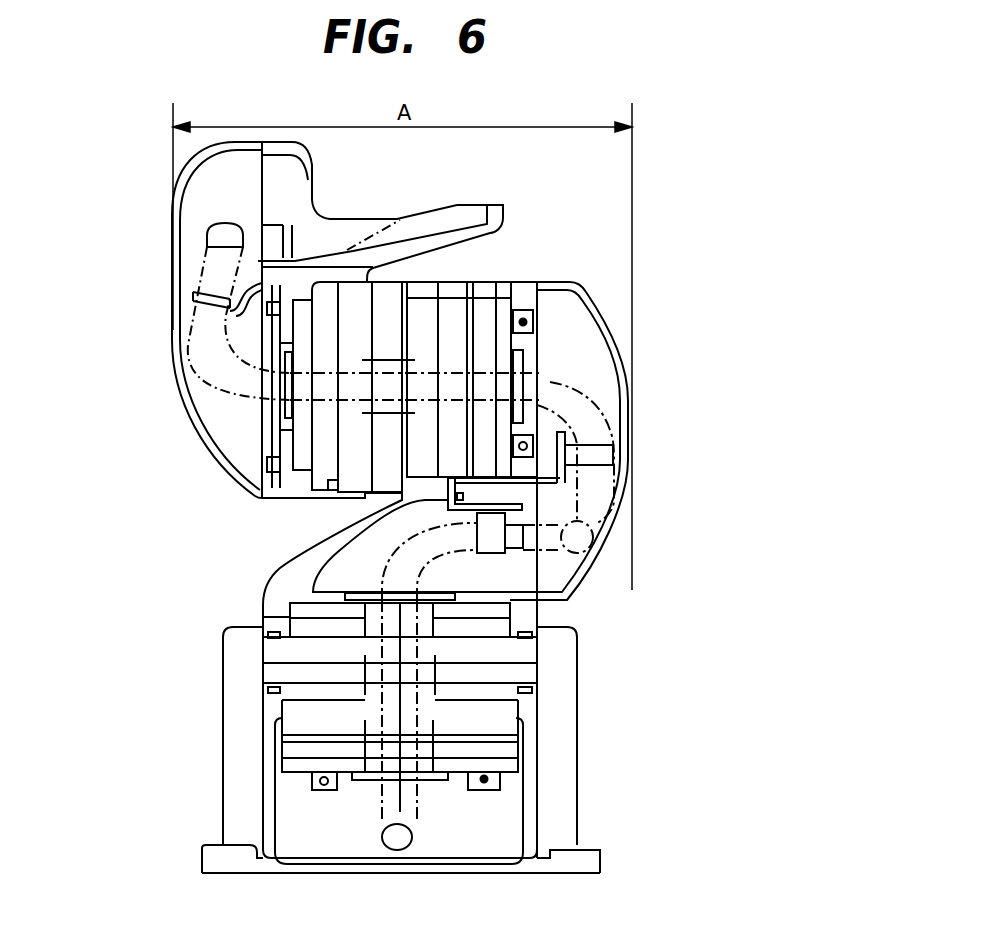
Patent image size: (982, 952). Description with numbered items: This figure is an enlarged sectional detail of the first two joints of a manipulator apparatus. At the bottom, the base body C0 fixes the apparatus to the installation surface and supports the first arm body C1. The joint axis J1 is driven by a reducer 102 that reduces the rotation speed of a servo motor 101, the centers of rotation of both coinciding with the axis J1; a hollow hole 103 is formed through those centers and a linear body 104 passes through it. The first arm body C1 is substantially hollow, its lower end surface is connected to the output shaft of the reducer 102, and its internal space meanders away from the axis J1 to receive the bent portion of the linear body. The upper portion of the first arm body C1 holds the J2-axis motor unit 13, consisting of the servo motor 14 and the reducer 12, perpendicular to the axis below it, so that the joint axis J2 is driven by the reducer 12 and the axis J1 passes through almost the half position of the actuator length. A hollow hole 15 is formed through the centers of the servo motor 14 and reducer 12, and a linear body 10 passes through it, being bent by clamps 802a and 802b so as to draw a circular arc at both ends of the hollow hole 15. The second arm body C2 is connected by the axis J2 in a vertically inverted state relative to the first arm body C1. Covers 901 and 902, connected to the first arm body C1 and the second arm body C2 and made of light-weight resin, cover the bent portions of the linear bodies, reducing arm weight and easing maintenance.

The cover 902 is at (176, 212).
The clamp 802b is at (190, 297).
The reducer 12 is at (318, 340).
The joint axis J2 is at (560, 387).
The linear body 10 is at (322, 403).
The first arm body C1 is at (275, 580).
The hollow hole 103 is at (365, 652).
The linear body 104 is at (365, 700).
The second arm body C2 is at (503, 220).
The J2-axis motor unit 13 is at (453, 308).
The hollow hole 15 is at (440, 360).
The servo motor 14 is at (527, 341).
The cover 901 is at (628, 390).
The clamp 802a is at (607, 455).
The reducer 102 is at (500, 652).
The servo motor 101 is at (500, 703).
The base body C0 is at (567, 728).
The joint axis J1 is at (400, 800).